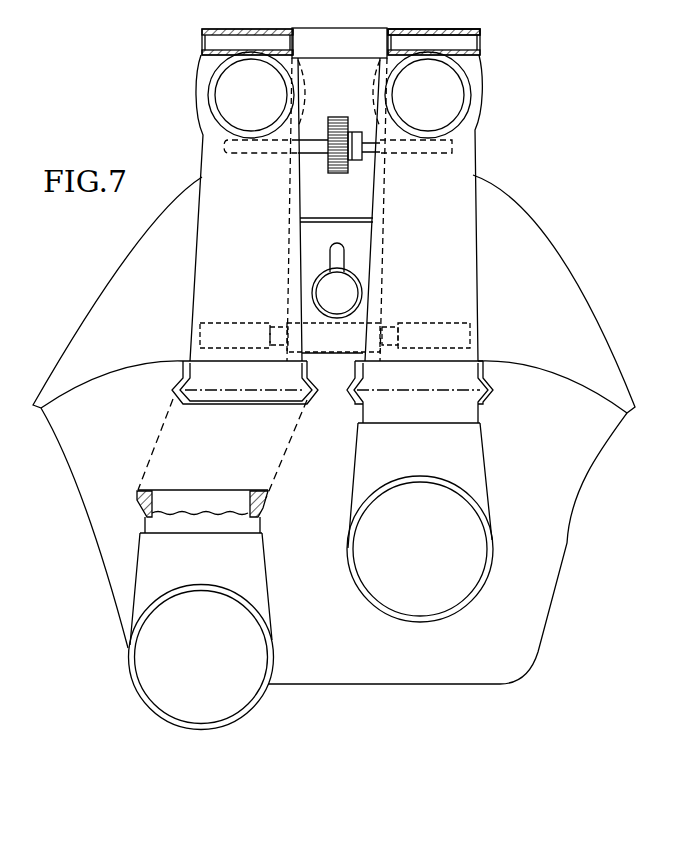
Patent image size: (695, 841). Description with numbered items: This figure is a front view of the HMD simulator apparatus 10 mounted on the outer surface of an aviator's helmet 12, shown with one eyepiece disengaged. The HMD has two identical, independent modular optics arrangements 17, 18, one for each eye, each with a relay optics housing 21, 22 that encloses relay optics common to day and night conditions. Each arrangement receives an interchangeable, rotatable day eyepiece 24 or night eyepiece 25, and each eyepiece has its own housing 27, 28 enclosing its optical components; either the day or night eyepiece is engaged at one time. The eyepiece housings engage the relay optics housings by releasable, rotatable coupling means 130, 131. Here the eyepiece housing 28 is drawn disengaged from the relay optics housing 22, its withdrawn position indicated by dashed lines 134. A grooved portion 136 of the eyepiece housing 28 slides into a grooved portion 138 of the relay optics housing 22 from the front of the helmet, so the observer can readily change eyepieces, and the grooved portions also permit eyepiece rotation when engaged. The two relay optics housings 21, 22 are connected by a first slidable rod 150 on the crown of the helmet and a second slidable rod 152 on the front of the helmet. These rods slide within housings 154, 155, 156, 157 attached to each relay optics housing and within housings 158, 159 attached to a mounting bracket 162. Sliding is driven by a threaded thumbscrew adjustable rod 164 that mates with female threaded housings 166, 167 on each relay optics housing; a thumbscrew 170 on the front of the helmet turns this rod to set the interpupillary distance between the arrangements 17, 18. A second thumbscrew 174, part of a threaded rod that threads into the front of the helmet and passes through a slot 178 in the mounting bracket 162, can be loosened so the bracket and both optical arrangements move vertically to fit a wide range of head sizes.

The HMD simulator apparatus 10 is at (140, 93).
The aviator's helmet 12 is at (537, 223).
The modular optics arrangement 17 is at (498, 157).
The modular optics arrangement 18 is at (182, 157).
The relay optics housing 21 is at (473, 248).
The relay optics housing 22 is at (197, 246).
The day eyepiece 24 is at (184, 562).
The night eyepiece 25 is at (470, 522).
The eyepiece housing 27 is at (487, 572).
The eyepiece housing 28 is at (137, 560).
The releasable rotatable coupling means 130 is at (495, 373).
The releasable rotatable coupling means 131 is at (171, 369).
The dashed lines 134 is at (168, 418).
The grooved portion of eyepiece housing 136 is at (140, 502).
The grooved portion of relay optics housing 138 is at (203, 392).
The first slidable rod 150 is at (395, 30).
The second slidable rod 152 is at (283, 322).
The rod housing 154 is at (473, 29).
The rod housing 155 is at (237, 28).
The rod housing 156 is at (423, 323).
The rod housing 157 is at (213, 323).
The rod housing 158 is at (327, 28).
The rod housing 159 is at (342, 348).
The mounting bracket 162 is at (322, 216).
The threaded thumbscrew adjustable rod 164 is at (306, 154).
The female threaded housing 166 is at (406, 156).
The female threaded housing 167 is at (274, 163).
The thumbscrew 170 is at (340, 117).
The second thumbscrew 174 is at (351, 302).
The slot 178 is at (340, 250).